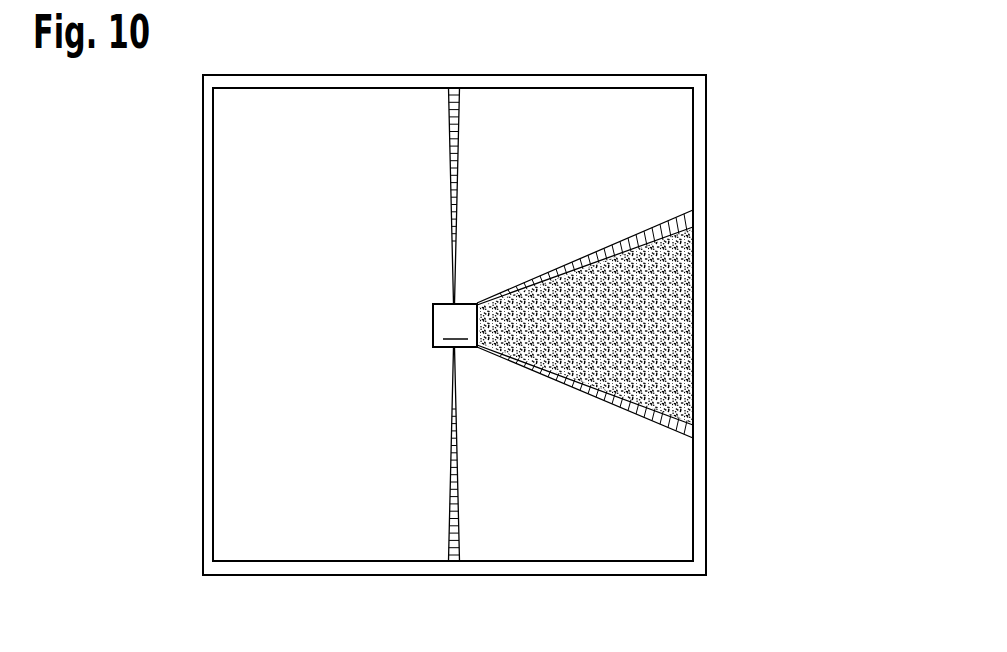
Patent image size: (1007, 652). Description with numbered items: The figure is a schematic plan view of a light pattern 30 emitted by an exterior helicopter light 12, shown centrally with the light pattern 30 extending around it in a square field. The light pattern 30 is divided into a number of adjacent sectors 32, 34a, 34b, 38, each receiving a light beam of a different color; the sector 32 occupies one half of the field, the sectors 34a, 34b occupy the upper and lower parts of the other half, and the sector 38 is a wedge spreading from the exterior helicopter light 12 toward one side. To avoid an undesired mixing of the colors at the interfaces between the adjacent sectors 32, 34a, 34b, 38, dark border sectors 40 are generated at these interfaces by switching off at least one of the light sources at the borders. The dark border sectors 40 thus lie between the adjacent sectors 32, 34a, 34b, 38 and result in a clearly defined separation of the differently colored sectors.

The light pattern 30 is at (748, 82).
The sector 32 is at (370, 110).
The sector 34a is at (603, 108).
The sector 34b is at (625, 543).
The dark border sector 40 is at (455, 98).
The sector 38 is at (677, 293).
The exterior helicopter light 12 is at (455, 325).